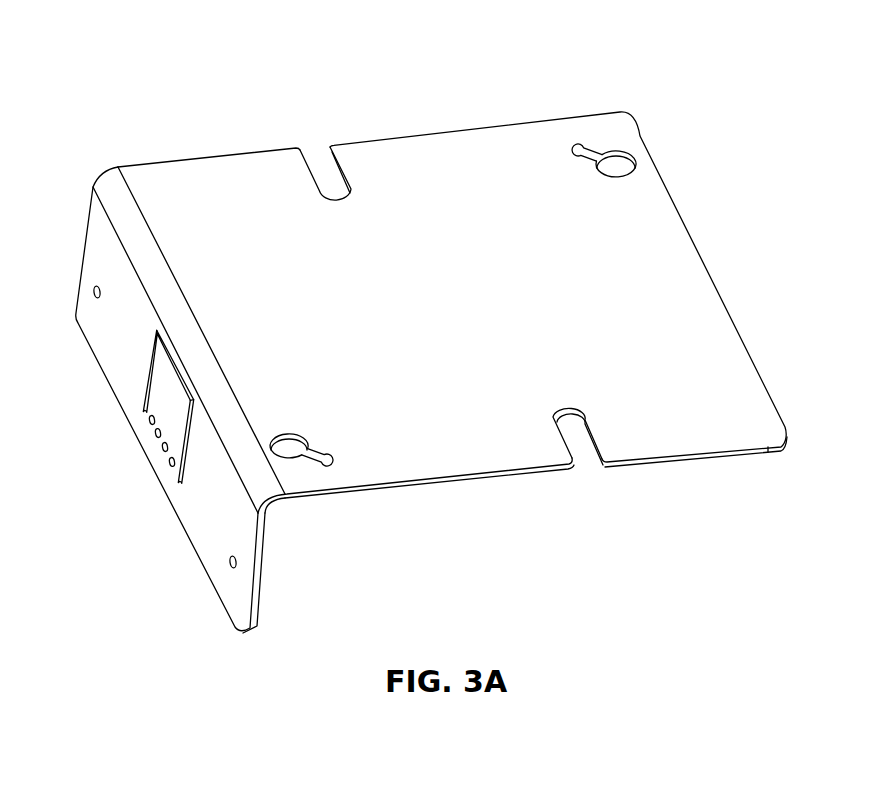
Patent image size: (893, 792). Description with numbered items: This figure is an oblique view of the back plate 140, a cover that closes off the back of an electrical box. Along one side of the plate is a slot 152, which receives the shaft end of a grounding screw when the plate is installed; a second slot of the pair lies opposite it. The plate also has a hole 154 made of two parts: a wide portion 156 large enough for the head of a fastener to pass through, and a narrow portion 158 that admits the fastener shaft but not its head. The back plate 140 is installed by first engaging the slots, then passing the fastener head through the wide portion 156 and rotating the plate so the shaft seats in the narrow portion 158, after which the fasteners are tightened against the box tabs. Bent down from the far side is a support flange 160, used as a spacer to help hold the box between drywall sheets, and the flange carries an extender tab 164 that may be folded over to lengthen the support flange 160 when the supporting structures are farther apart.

The back plate 140 is at (158, 122).
The slot 152 is at (320, 163).
The hole 154 is at (448, 152).
The wide portion 156 is at (615, 168).
The narrow portion 158 is at (587, 147).
The support flange 160 is at (217, 503).
The extender tab 164 is at (170, 407).